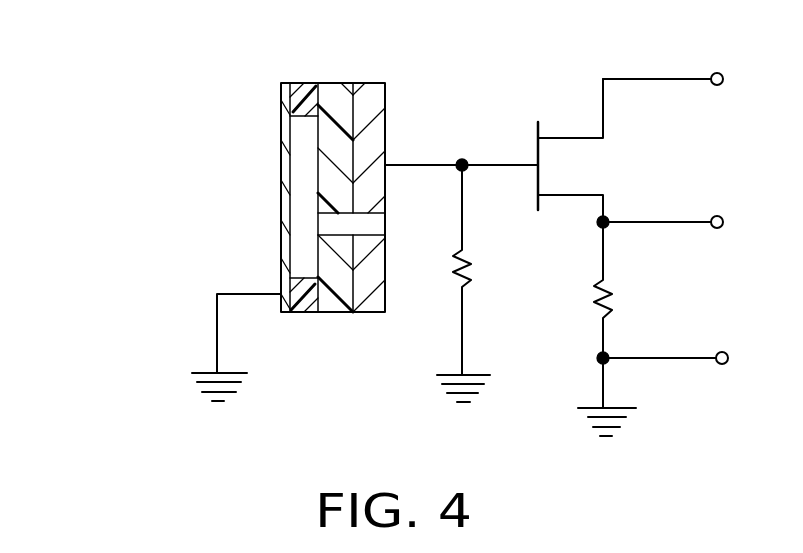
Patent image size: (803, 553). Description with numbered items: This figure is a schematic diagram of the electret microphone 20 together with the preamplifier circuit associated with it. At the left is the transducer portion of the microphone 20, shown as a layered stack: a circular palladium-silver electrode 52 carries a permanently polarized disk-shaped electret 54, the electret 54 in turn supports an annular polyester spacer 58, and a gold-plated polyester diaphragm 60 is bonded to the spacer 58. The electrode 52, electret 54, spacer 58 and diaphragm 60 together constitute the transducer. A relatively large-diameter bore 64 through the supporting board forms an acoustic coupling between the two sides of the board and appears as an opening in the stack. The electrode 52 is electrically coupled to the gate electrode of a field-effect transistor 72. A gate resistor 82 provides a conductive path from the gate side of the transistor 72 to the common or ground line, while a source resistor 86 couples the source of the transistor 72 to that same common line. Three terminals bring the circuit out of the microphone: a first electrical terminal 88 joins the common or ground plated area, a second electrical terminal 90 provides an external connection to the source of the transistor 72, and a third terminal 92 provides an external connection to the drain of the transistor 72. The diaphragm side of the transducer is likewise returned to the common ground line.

The microphone 20 is at (157, 338).
The electrode 52 is at (380, 107).
The electret 54 is at (334, 100).
The annular spacer 58 is at (303, 83).
The diaphragm 60 is at (281, 170).
The bore 64 is at (370, 232).
The field-effect transistor 72 is at (538, 148).
The gate resistor 82 is at (470, 258).
The source resistor 86 is at (613, 290).
The first electrical terminal 88 is at (664, 359).
The second electrical terminal 90 is at (650, 222).
The third terminal 92 is at (672, 78).